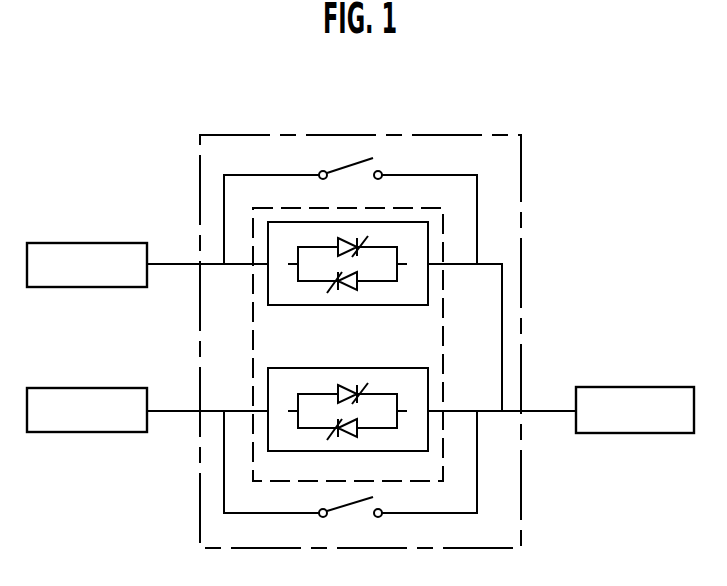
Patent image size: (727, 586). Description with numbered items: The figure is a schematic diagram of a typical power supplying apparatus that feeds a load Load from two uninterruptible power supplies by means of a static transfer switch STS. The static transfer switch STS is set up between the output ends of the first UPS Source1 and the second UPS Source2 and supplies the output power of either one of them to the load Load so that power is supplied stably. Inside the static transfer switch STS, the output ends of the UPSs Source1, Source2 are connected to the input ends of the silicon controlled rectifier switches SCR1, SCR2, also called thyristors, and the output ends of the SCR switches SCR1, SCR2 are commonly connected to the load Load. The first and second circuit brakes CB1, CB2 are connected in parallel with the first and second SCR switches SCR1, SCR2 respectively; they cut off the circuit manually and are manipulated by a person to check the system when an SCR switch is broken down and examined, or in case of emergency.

The static transfer switch STS is at (360, 323).
The first circuit brake CB1 is at (350, 211).
The second circuit brake CB2 is at (350, 479).
The first SCR switch SCR1 is at (348, 280).
The second SCR switch SCR2 is at (348, 426).
The first UPS Source1 is at (87, 265).
The second UPS Source2 is at (87, 410).
The load Load is at (635, 410).